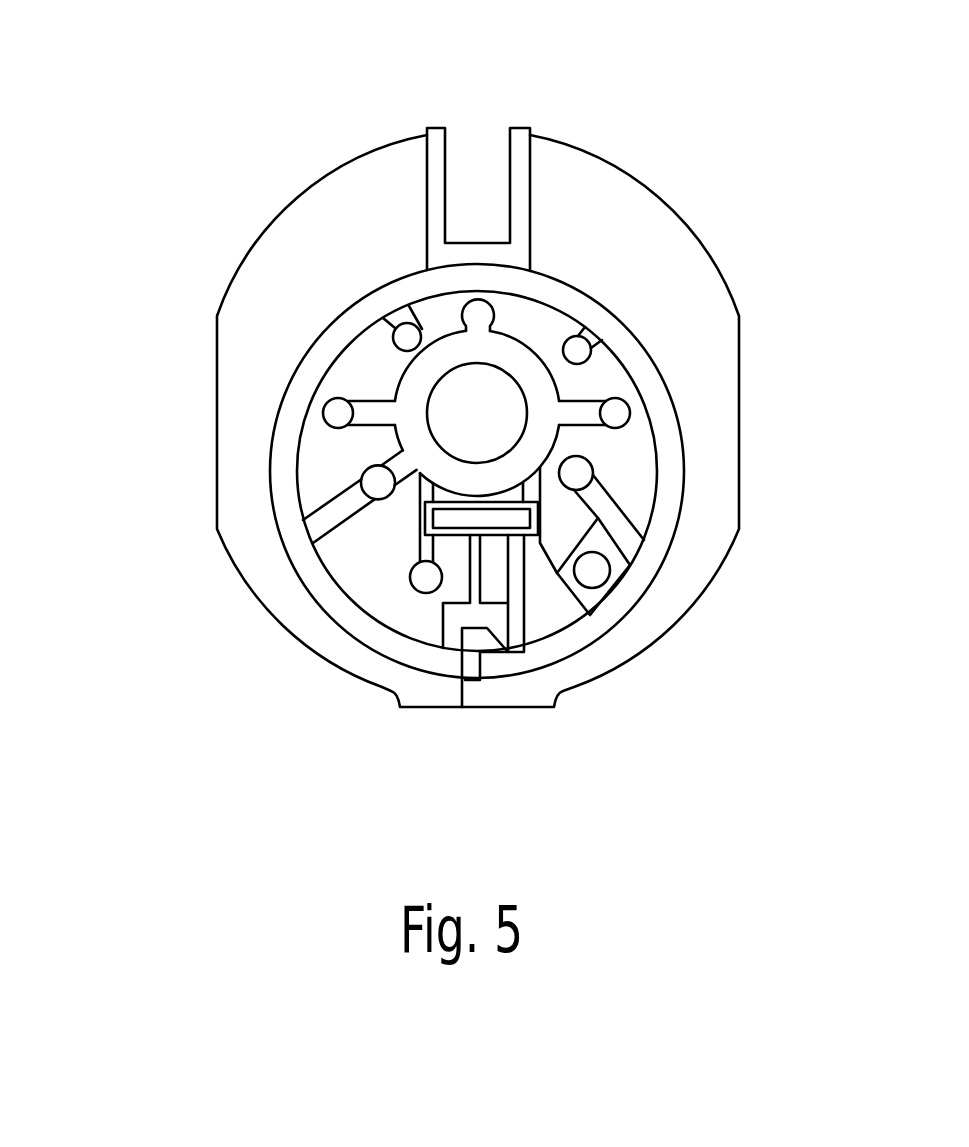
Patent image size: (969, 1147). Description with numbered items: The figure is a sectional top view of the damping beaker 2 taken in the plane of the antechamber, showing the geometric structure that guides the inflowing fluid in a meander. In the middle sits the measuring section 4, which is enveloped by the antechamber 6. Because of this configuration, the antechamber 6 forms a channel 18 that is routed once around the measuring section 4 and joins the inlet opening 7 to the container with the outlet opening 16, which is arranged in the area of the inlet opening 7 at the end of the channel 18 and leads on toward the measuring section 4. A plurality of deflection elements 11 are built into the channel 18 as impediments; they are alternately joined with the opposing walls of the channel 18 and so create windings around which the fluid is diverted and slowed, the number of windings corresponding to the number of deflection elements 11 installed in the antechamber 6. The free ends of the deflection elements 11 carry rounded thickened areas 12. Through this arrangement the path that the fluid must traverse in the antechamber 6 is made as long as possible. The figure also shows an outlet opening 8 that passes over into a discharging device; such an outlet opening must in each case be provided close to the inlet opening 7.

The damping beaker 2 is at (200, 328).
The measuring section 4 is at (459, 391).
The antechamber 6 is at (641, 313).
The inlet opening 7 is at (522, 613).
The outlet opening 8 is at (507, 517).
The deflection elements 11 is at (337, 512).
The rounded thickened areas 12 is at (333, 413).
The outlet opening 16 is at (596, 576).
The channel 18 is at (639, 449).